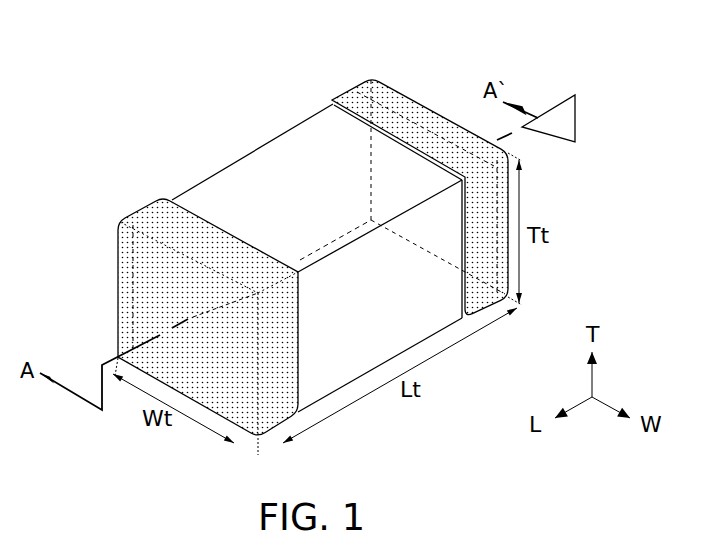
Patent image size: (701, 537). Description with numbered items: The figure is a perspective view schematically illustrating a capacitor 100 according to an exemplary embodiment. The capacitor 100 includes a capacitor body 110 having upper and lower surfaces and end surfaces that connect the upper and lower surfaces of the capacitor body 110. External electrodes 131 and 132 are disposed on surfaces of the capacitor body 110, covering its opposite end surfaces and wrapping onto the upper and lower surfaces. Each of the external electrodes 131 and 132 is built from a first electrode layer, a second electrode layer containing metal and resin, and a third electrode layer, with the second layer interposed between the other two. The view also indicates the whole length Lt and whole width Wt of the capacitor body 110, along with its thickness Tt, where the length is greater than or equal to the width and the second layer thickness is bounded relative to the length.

The multilayer capacitor 100 is at (121, 34).
The capacitor body 110 is at (257, 160).
The external electrode 131 is at (155, 223).
The external electrode 132 is at (362, 92).